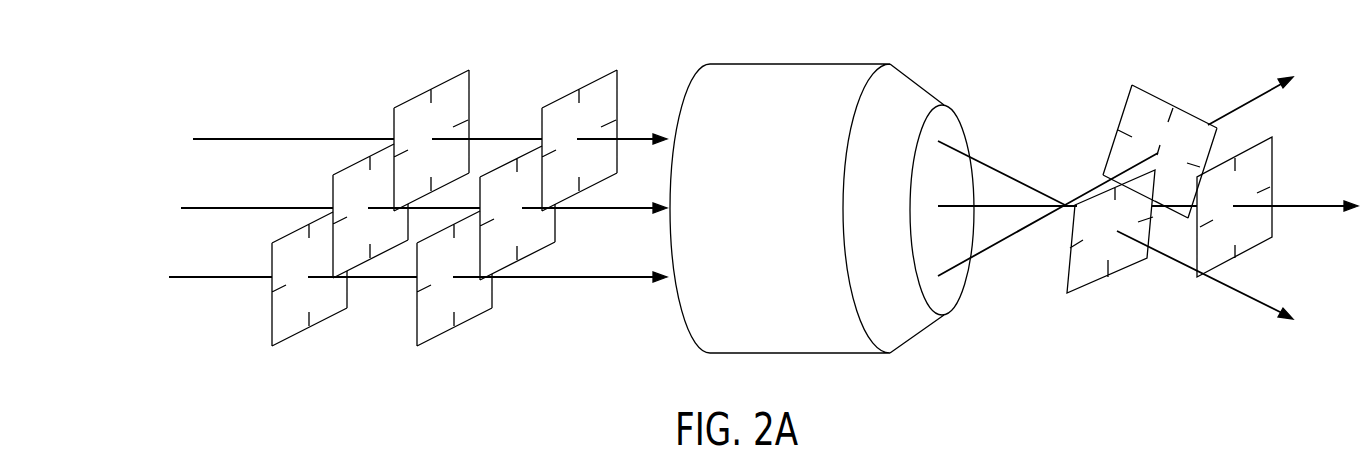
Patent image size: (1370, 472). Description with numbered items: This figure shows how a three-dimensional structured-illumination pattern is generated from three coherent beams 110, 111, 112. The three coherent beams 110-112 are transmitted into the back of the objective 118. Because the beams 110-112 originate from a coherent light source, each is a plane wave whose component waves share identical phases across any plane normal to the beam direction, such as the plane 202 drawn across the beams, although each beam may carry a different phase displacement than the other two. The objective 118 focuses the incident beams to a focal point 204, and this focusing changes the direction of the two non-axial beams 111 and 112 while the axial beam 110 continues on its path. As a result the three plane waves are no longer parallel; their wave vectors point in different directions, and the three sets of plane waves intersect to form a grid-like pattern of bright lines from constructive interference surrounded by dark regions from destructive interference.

The coherent beam 110 is at (208, 207).
The non-axial coherent beam 111 is at (207, 277).
The non-axial coherent beam 112 is at (207, 138).
The objective 118 is at (779, 214).
The plane 202 is at (470, 80).
The focal point 204 is at (1066, 204).